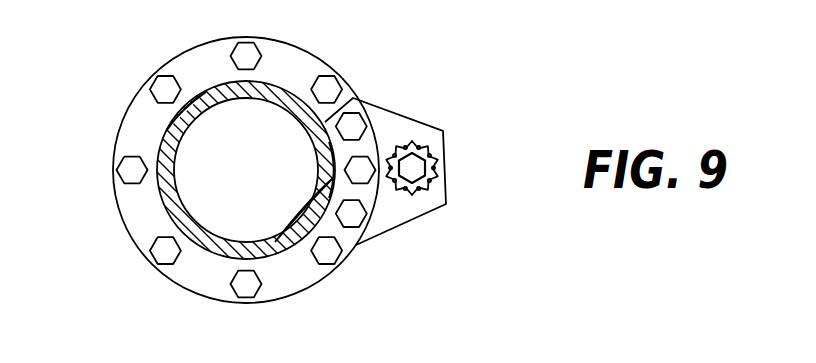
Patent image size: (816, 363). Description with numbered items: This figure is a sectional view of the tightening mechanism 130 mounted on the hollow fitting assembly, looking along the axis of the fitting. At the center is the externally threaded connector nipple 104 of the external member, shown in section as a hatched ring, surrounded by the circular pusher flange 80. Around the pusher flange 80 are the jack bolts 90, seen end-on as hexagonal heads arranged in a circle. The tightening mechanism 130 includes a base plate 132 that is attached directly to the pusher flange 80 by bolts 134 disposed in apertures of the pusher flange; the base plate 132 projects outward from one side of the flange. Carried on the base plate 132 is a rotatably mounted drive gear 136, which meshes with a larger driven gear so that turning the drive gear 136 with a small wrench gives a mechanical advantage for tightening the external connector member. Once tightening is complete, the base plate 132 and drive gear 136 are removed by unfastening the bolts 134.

The pusher flange 80 is at (150, 217).
The jack bolts 90 is at (160, 90).
The externally threaded connector nipple 104 is at (158, 140).
The tightening mechanism 130 is at (450, 170).
The base plate 132 is at (402, 130).
The bolts 134 is at (353, 223).
The drive gear 136 is at (420, 193).